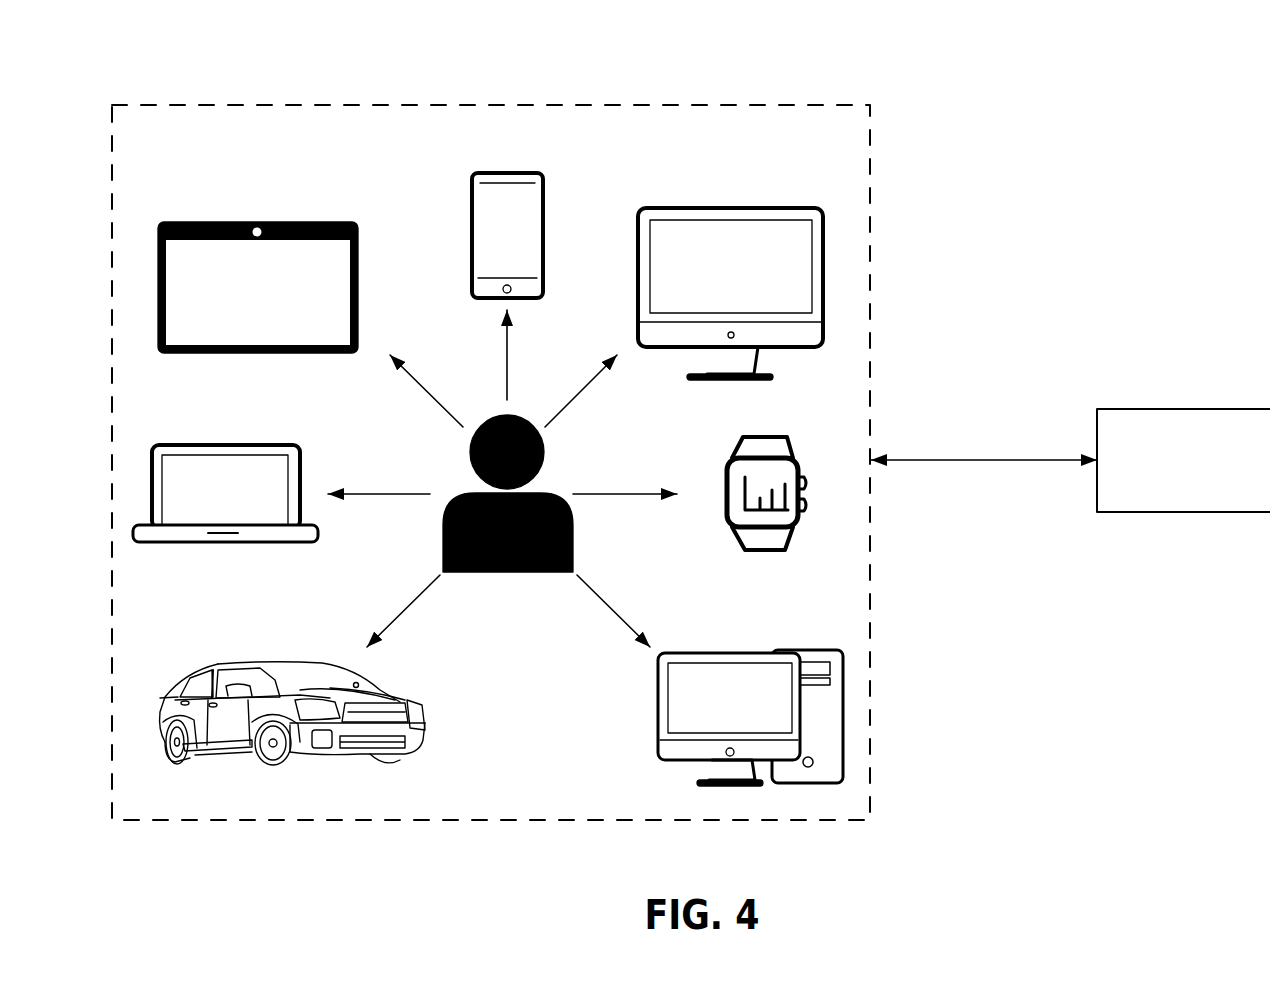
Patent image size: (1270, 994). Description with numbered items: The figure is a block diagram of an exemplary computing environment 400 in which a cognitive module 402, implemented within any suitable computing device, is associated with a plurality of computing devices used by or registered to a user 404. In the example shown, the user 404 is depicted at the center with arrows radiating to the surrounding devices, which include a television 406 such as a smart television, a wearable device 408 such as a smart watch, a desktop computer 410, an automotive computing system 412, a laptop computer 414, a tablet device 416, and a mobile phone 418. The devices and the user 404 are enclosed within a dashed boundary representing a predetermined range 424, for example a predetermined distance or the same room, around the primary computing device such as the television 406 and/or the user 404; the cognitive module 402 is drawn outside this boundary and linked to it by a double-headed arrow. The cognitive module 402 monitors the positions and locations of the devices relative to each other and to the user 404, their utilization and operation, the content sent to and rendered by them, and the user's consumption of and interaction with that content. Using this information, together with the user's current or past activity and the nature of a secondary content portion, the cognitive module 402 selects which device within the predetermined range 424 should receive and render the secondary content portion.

The computing environment 400 is at (90, 70).
The cognitive module 402 is at (1192, 409).
The user 404 is at (522, 420).
The television 406 is at (733, 208).
The wearable device 408 is at (780, 437).
The desktop computer 410 is at (735, 653).
The automotive computing system 412 is at (272, 662).
The laptop computer 414 is at (226, 445).
The tablet device 416 is at (260, 222).
The mobile phone 418 is at (509, 173).
The predetermined range 424 is at (693, 105).